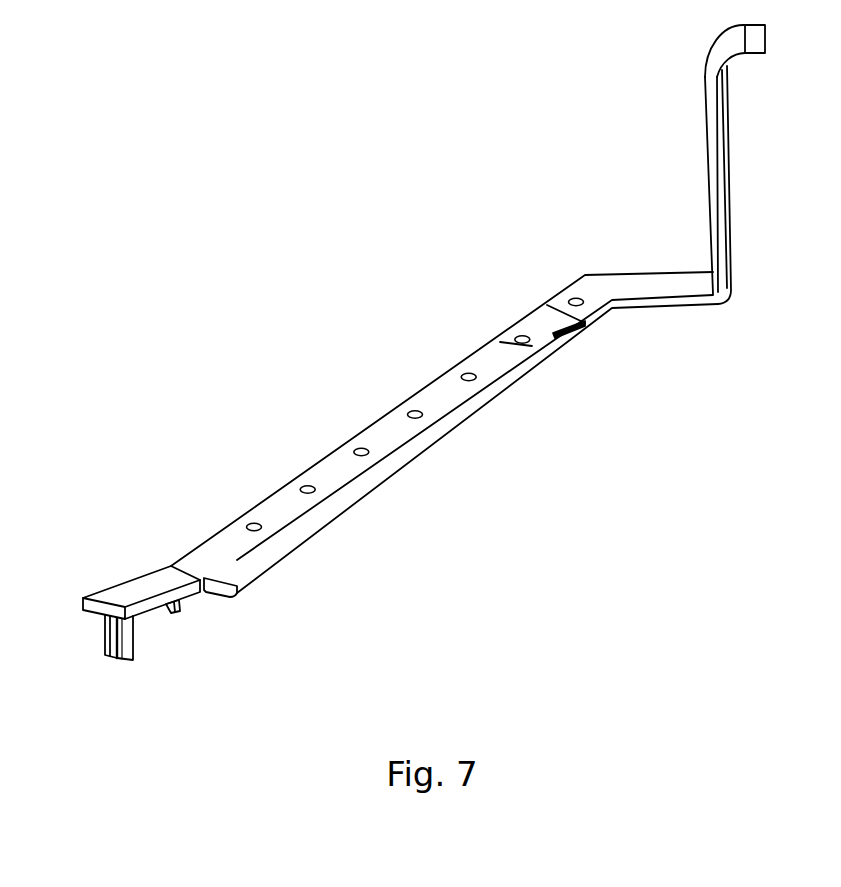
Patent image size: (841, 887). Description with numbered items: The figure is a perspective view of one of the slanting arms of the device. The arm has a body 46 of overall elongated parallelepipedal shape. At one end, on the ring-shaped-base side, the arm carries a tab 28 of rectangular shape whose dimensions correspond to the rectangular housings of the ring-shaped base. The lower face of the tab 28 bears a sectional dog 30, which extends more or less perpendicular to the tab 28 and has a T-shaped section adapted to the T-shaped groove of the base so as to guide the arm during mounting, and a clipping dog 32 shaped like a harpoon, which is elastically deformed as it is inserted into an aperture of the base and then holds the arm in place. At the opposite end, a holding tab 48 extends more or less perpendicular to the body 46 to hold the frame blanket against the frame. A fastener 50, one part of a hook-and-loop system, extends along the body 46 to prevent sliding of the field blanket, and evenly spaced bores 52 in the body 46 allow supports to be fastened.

The tab 28 is at (145, 587).
The sectional dog 30 is at (113, 660).
The clipping dog 32 is at (178, 616).
The body 46 is at (380, 435).
The holding tab 48 is at (710, 142).
The fastener 50 is at (292, 555).
The bores 52 is at (258, 520).